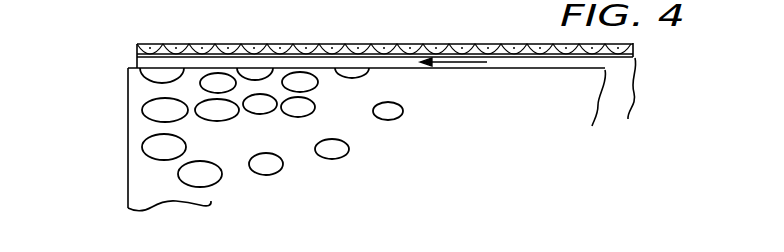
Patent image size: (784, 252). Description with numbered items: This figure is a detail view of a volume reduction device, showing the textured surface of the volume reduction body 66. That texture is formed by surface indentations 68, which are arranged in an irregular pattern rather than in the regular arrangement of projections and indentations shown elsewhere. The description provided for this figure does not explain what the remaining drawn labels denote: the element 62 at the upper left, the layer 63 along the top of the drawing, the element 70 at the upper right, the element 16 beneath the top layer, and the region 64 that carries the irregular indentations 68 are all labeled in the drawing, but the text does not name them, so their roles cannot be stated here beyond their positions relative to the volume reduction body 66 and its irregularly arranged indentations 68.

The laminate assembly 62 is at (96, 0).
The top cover layer 63 is at (385, 35).
The particulate filled layer 70 is at (537, 47).
The substrate web 16 is at (330, 67).
The volume reduction body 66 is at (487, 85).
The foam body with cells 64 is at (93, 90).
The surface indentations 68 is at (255, 80).